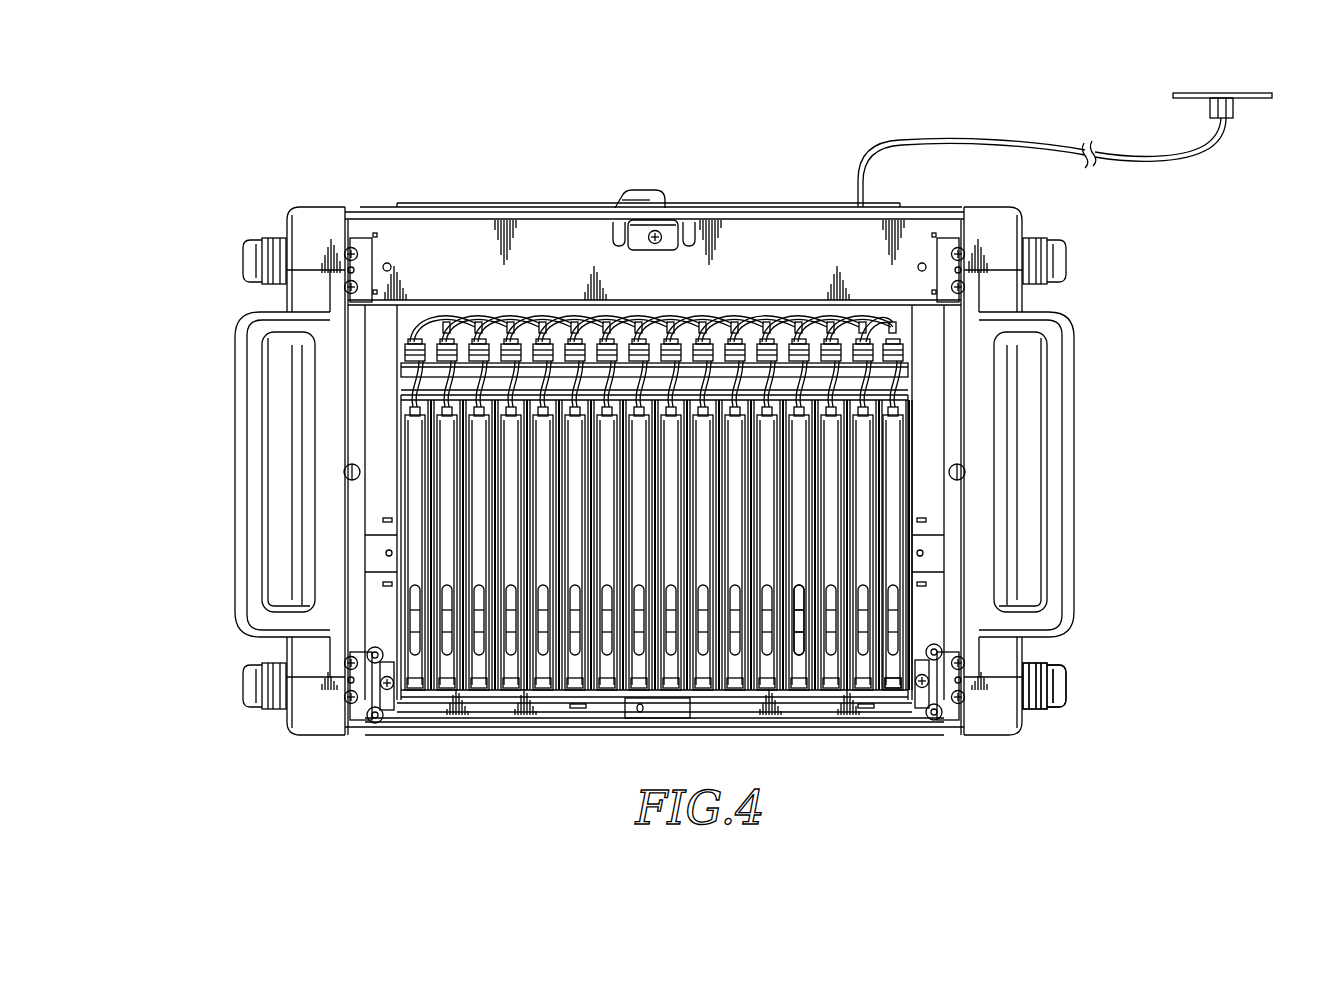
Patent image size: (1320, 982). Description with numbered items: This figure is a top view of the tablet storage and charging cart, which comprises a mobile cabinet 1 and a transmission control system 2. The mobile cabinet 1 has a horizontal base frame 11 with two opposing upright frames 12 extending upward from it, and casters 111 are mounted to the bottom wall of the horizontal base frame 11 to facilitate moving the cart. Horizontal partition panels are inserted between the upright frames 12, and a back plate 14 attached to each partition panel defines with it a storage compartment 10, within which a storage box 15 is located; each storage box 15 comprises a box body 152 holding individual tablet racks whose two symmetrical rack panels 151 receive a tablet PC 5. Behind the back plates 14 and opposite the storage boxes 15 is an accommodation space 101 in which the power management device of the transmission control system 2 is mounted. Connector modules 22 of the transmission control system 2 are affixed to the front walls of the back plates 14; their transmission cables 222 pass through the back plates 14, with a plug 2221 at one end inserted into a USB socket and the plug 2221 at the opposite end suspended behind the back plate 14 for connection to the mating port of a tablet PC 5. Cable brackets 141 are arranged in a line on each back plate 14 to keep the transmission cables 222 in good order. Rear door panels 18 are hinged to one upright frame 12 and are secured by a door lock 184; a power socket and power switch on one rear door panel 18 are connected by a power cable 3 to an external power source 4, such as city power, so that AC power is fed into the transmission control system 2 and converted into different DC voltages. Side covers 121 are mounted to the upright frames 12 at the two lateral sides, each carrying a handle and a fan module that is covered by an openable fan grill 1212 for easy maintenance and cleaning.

The mobile cabinet 1 is at (1112, 377).
The transmission control system 2 is at (185, 268).
The power cable 3 is at (897, 148).
The external power source 4 is at (1184, 93).
The tablet PC 5 is at (480, 678).
The storage compartment 10 is at (547, 704).
The horizontal base frame 11 is at (600, 714).
The upright frame 12 is at (385, 702).
The back plate 14 is at (781, 338).
The storage box 15 is at (718, 692).
The rear door panel 18 is at (579, 208).
The connector module 22 is at (533, 320).
The accommodation space 101 is at (818, 250).
The caster 111 is at (1050, 700).
The side cover 121 is at (1000, 283).
The cable bracket 141 is at (676, 335).
The rack panel 151 is at (786, 657).
The box body 152 is at (888, 692).
The door lock 184 is at (625, 203).
The transmission cable 222 is at (410, 372).
The fan grill 1212 is at (1065, 415).
The plug 2221 is at (480, 328).